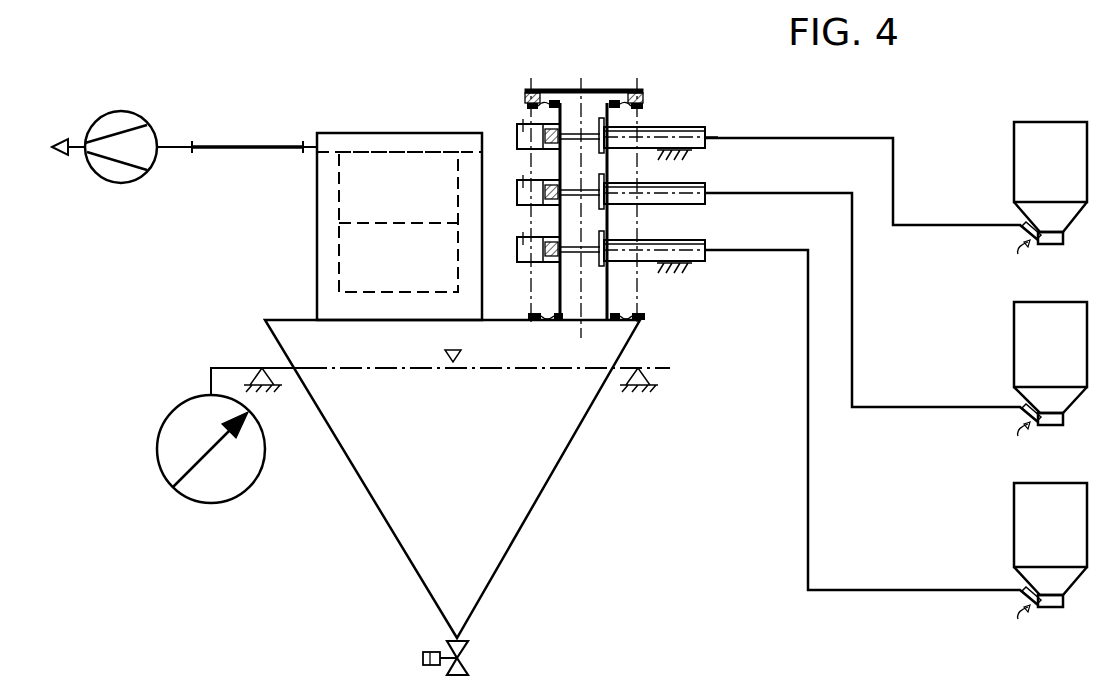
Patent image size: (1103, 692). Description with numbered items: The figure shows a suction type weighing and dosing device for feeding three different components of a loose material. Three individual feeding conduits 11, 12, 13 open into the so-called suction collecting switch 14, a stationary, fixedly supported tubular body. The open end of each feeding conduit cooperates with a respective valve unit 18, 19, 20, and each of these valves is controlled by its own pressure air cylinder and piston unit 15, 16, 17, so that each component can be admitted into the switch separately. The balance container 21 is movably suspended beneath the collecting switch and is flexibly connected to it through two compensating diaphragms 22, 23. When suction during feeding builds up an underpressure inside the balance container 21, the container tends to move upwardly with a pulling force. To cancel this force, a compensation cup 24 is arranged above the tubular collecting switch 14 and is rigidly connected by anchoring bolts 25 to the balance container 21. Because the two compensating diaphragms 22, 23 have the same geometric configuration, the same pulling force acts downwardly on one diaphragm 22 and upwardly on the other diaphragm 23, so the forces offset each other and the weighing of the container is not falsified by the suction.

The feeding conduit 11 is at (840, 138).
The feeding conduit 12 is at (810, 193).
The feeding conduit 13 is at (773, 250).
The suction collecting switch 14 is at (598, 228).
The pressure air cylinder and piston unit 15 is at (523, 130).
The pressure air cylinder and piston unit 16 is at (524, 186).
The pressure air cylinder and piston unit 17 is at (524, 244).
The valve unit 18 is at (608, 118).
The valve unit 19 is at (603, 173).
The valve unit 20 is at (618, 262).
The balance container 21 is at (513, 521).
The compensating diaphragm 22 is at (640, 324).
The compensating diaphragm 23 is at (637, 88).
The compensation cup 24 is at (525, 88).
The anchoring bolt 25 is at (532, 288).